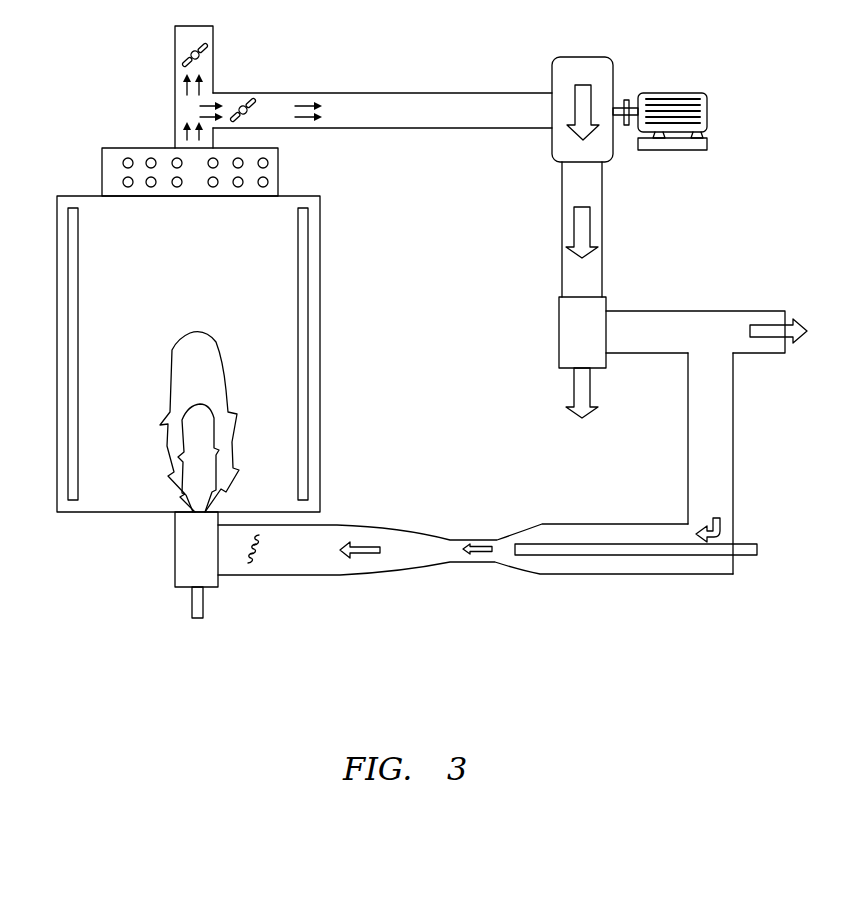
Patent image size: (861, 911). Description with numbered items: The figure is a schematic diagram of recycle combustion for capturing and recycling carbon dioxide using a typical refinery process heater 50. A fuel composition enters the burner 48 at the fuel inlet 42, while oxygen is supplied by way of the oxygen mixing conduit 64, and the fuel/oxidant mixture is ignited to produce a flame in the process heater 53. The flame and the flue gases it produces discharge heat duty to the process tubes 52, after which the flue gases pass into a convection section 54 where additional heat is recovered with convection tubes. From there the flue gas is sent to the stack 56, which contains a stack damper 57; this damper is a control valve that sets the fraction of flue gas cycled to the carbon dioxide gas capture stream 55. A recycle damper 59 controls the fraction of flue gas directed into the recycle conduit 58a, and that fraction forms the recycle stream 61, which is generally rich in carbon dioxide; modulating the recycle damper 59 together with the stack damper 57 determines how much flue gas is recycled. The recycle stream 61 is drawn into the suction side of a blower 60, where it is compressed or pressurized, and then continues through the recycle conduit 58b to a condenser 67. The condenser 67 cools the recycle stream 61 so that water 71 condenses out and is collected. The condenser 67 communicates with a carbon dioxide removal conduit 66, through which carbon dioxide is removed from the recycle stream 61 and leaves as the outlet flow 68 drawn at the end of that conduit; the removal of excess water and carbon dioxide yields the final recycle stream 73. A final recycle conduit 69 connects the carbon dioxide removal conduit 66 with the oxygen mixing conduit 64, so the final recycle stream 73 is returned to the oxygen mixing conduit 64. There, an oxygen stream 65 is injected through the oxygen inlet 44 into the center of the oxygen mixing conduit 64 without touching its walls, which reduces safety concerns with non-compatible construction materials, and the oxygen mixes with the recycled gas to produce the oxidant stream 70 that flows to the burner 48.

The fuel inlet 42 is at (197, 631).
The oxygen inlet 44 is at (770, 549).
The burner 48 is at (186, 551).
The refinery process heater 50 is at (731, 248).
The process tubes 52 is at (72, 355).
The process heater 53 is at (105, 273).
The convection section 54 is at (102, 172).
The CO2 gas capture stream 55 is at (185, 86).
The stack 56 is at (175, 50).
The stack damper 57 is at (201, 55).
The recycle conduit 58a is at (378, 98).
The recycle conduit 58b is at (572, 185).
The recycle damper 59 is at (255, 101).
The blower 60 is at (605, 74).
The recycle stream 61 is at (306, 118).
The oxygen mixing conduit 64 is at (295, 557).
The oxygen stream 65 is at (481, 556).
The carbon dioxide removal conduit 66 is at (622, 316).
The condenser 67 is at (557, 335).
The exhaust outlet flow 68 is at (770, 330).
The final recycle conduit 69 is at (717, 432).
The oxidant stream 70 is at (370, 556).
The water 71 is at (572, 386).
The final recycle stream 73 is at (721, 527).